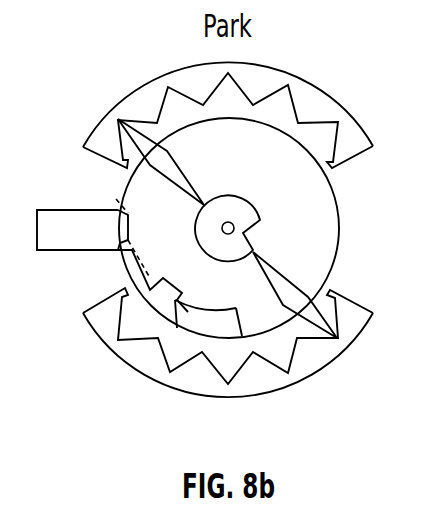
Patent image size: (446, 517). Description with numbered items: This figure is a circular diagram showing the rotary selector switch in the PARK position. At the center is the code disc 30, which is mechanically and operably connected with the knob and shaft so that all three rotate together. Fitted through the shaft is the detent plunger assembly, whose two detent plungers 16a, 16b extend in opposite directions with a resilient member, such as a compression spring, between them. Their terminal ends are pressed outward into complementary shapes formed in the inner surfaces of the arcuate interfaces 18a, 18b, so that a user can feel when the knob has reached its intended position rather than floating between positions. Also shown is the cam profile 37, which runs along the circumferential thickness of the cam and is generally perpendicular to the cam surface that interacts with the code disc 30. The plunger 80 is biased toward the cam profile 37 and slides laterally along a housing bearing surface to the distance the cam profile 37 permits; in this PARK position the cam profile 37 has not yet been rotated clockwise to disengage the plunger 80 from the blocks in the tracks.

The interface 18a is at (143, 98).
The interface 18b is at (143, 362).
The detent plunger 16a is at (133, 139).
The detent plunger 16b is at (323, 313).
The code disc 30 is at (236, 306).
The cam profile 37 is at (195, 337).
The plunger 80 is at (60, 240).